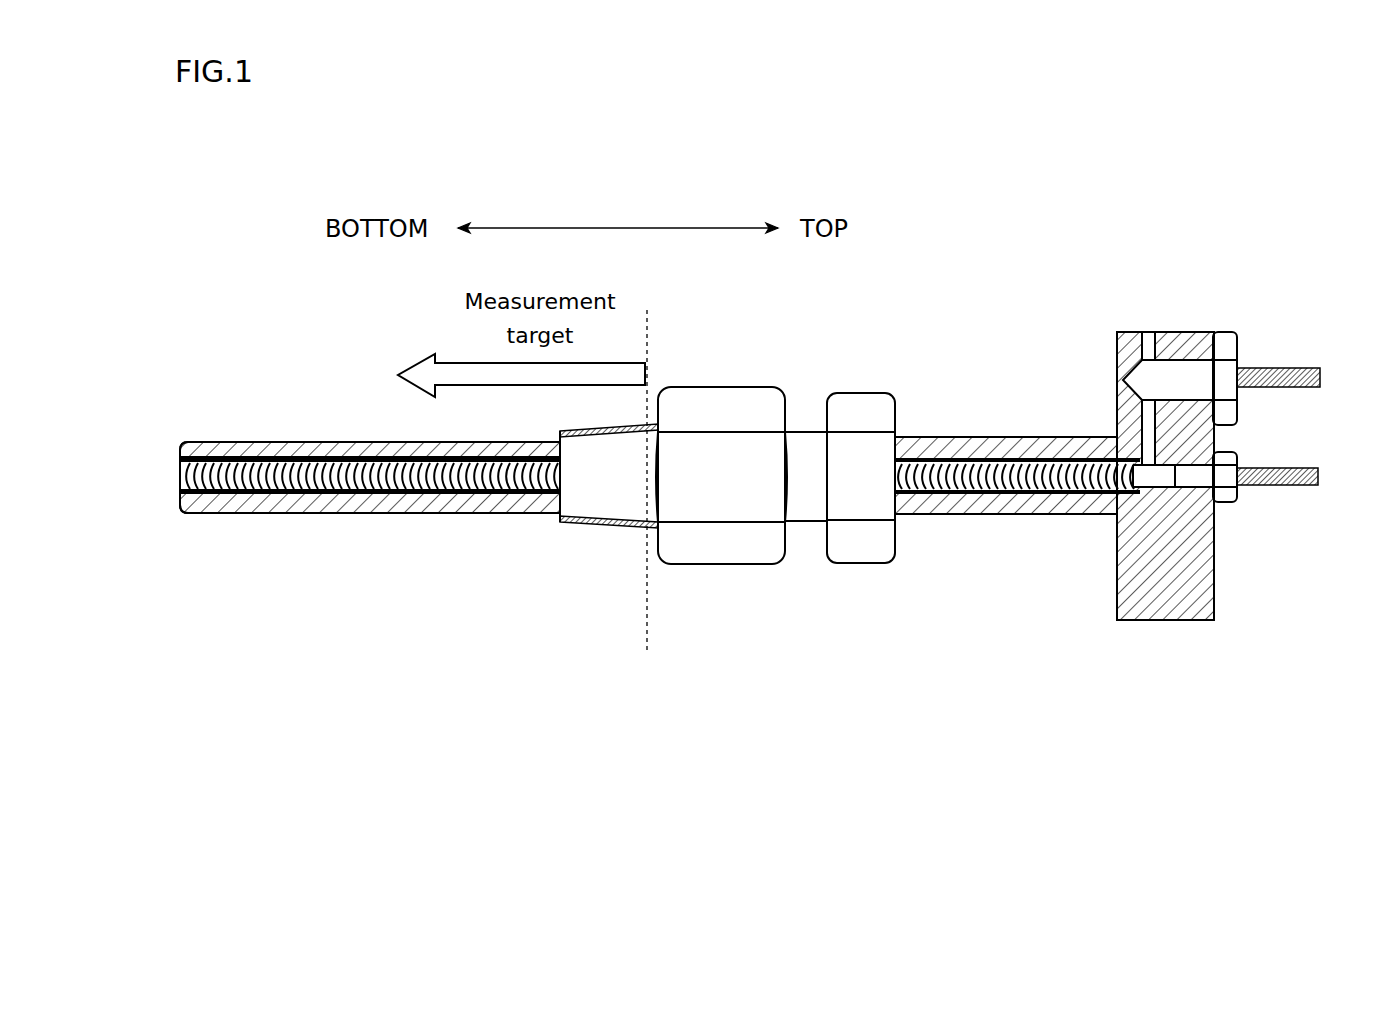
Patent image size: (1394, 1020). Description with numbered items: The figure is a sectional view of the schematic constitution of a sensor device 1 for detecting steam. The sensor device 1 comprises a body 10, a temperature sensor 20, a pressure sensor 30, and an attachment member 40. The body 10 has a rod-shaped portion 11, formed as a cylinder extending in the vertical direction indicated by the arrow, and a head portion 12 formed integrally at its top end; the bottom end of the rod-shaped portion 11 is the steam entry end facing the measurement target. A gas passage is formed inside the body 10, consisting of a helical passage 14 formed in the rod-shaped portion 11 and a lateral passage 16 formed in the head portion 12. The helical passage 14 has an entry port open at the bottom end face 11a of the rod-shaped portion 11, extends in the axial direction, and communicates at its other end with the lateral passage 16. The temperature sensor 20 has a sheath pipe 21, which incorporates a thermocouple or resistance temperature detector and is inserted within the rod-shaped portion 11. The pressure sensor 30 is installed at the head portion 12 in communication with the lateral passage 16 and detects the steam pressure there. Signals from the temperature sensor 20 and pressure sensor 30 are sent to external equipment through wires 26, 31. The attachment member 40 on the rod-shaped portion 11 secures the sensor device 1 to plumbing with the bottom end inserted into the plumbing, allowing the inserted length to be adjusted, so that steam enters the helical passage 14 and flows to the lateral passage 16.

The sensor device 1 is at (985, 269).
The body 10 is at (1034, 436).
The rod-shaped portion 11 is at (244, 441).
The bottom end face 11a is at (184, 500).
The head portion 12 is at (1178, 332).
The helical passage 14 is at (306, 452).
The lateral passage 16 is at (1114, 419).
The temperature sensor 20 is at (1221, 506).
The sheath pipe 21 is at (388, 515).
The wire 26 is at (1322, 476).
The pressure sensor 30 is at (1222, 332).
The wire 31 is at (1322, 379).
The attachment member 40 is at (719, 565).